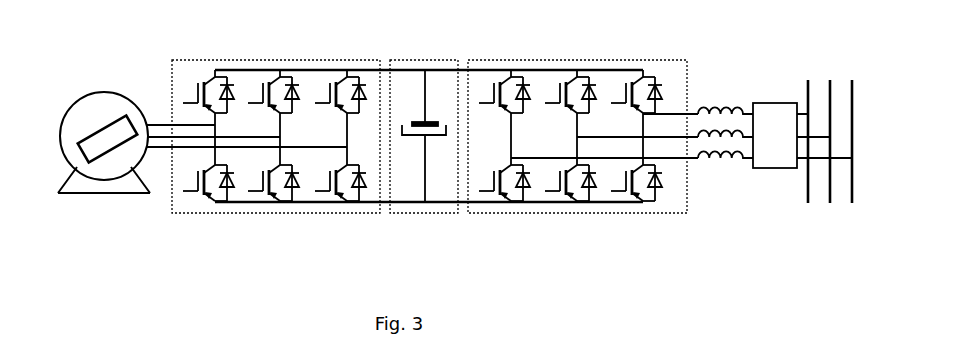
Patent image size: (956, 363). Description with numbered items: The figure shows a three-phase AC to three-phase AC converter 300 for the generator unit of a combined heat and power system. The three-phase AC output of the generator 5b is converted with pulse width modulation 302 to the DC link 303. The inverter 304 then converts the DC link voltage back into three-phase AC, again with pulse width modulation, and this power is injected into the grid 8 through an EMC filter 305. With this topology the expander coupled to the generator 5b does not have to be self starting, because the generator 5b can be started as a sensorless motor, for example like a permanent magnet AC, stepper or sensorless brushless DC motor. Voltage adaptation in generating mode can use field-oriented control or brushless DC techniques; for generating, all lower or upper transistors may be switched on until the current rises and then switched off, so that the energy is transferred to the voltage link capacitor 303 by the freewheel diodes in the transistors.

The generator 5b is at (104, 125).
The three-phase AC to three-phase AC converter 300 is at (435, 160).
The PWM 302 is at (276, 119).
The DC link 303 is at (424, 119).
The inverter 304 is at (583, 119).
The EMC filter 305 is at (747, 135).
The grid 8 is at (824, 120).